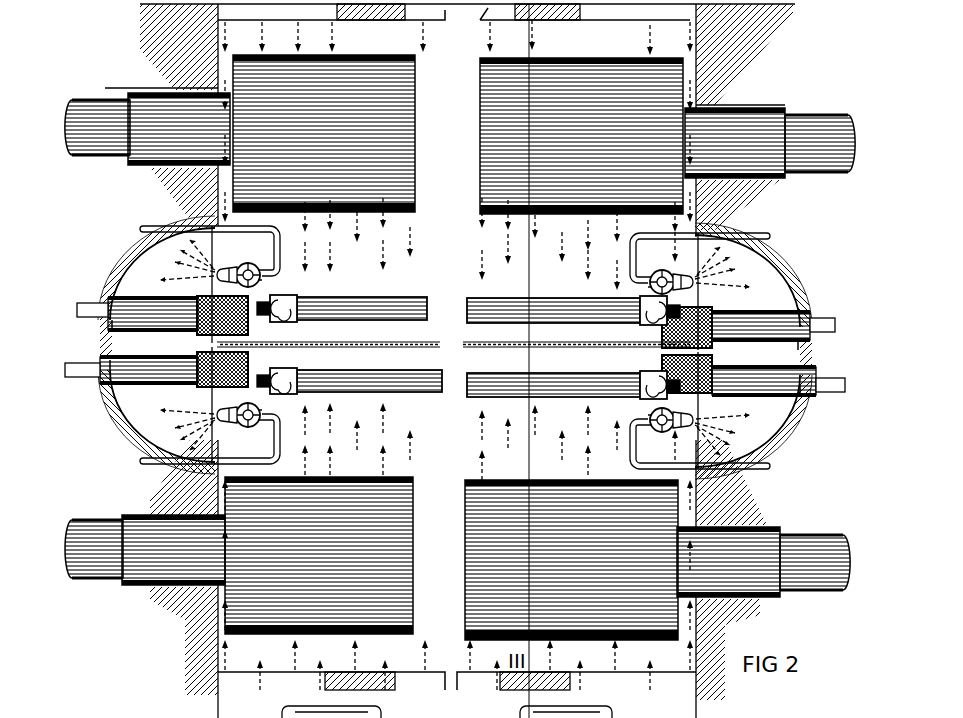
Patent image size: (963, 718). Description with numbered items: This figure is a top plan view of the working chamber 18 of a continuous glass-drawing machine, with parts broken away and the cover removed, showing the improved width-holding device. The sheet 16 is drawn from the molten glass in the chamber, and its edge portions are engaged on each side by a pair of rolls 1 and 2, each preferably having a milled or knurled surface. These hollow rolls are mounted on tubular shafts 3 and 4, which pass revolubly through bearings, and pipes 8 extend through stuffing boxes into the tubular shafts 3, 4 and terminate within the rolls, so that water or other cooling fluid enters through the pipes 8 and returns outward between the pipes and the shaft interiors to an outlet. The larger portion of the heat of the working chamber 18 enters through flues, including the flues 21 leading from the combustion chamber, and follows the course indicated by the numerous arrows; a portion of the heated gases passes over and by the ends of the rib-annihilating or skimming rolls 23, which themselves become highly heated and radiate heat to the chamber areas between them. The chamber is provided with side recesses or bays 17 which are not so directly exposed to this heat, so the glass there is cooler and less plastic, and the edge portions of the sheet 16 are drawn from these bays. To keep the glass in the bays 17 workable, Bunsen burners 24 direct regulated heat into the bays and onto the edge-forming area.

The roll 1 is at (116, 428).
The roll 2 is at (150, 258).
The tubular shaft 3 is at (110, 394).
The tubular shaft 4 is at (112, 292).
The pipe 8 is at (75, 309).
The sheet 16 is at (490, 345).
The side recess or bay 17 is at (461, 343).
The working chamber 18 is at (457, 355).
The flue 21 is at (456, 695).
The rib-annihilating or skimming roll 23 is at (498, 84).
The Bunsen burner 24 is at (156, 254).